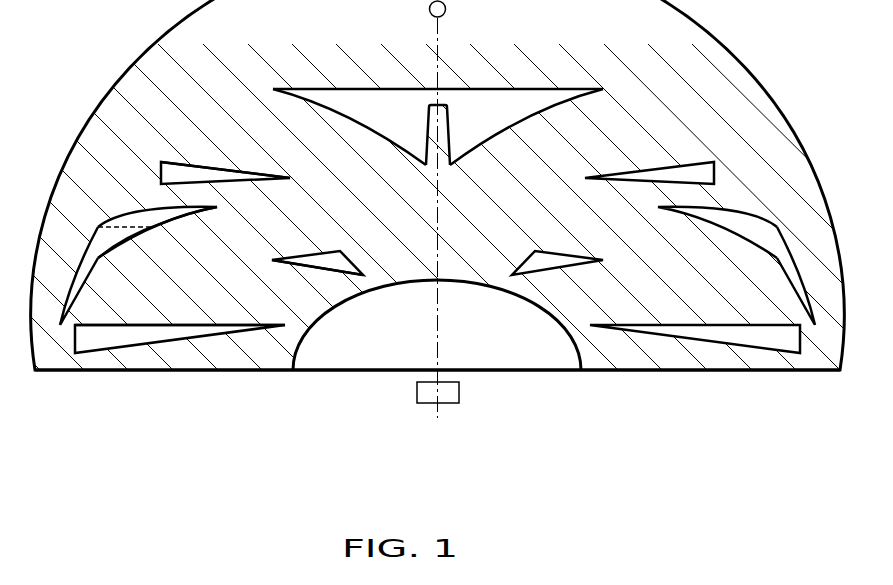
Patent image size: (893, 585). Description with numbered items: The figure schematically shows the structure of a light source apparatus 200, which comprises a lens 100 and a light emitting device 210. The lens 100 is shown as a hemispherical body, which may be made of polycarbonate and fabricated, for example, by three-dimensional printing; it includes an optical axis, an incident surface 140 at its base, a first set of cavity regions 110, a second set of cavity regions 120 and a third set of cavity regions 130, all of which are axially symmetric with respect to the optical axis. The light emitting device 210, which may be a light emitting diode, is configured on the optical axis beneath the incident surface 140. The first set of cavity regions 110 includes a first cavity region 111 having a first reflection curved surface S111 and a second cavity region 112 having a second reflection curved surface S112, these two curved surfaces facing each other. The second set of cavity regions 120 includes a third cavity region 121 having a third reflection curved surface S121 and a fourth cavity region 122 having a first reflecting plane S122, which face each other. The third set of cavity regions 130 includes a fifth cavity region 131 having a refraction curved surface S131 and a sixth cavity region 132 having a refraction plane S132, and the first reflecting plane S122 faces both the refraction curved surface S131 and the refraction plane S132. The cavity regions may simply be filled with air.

The lens 100 is at (675, 130).
The first set of cavity regions 110 is at (183, 62).
The first cavity region 111 is at (273, 107).
The first reflection curved surface S111 is at (352, 117).
The second cavity region 112 is at (158, 175).
The second reflection curved surface S112 is at (228, 168).
The second set of cavity regions 120 is at (252, 411).
The third cavity region 121 is at (314, 257).
The third reflection curved surface S121 is at (323, 267).
The fourth cavity region 122 is at (125, 338).
The first reflecting plane S122 is at (207, 325).
The third set of cavity regions 130 is at (72, 160).
The fifth cavity region 131 is at (133, 213).
The refraction curved surface S131 is at (173, 220).
The sixth cavity region 132 is at (100, 245).
The refraction plane S132 is at (118, 250).
The incident surface 140 is at (546, 314).
The light source apparatus 200 is at (843, 438).
The light emitting device 210 is at (445, 398).